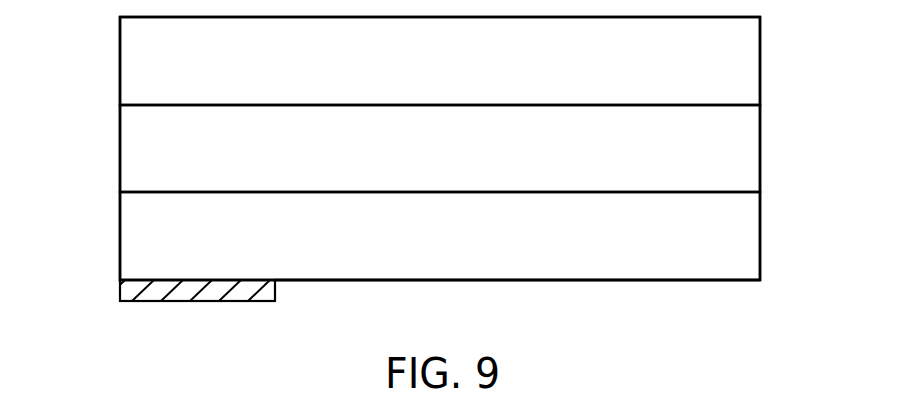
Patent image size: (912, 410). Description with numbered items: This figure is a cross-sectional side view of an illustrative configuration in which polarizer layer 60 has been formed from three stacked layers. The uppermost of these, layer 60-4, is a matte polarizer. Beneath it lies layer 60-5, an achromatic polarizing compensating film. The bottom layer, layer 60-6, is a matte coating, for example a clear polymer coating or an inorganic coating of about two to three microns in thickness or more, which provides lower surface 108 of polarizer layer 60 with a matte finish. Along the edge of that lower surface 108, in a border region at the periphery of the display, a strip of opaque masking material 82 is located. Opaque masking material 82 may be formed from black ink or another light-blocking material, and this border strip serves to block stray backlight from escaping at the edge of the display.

The polarizer layer 60 is at (88, 15).
The matte polarizer 60-4 is at (747, 67).
The achromatic polarizing compensating film 60-5 is at (747, 147).
The matte coating 60-6 is at (747, 234).
The opaque masking material 82 is at (183, 297).
The lower surface 108 is at (645, 280).